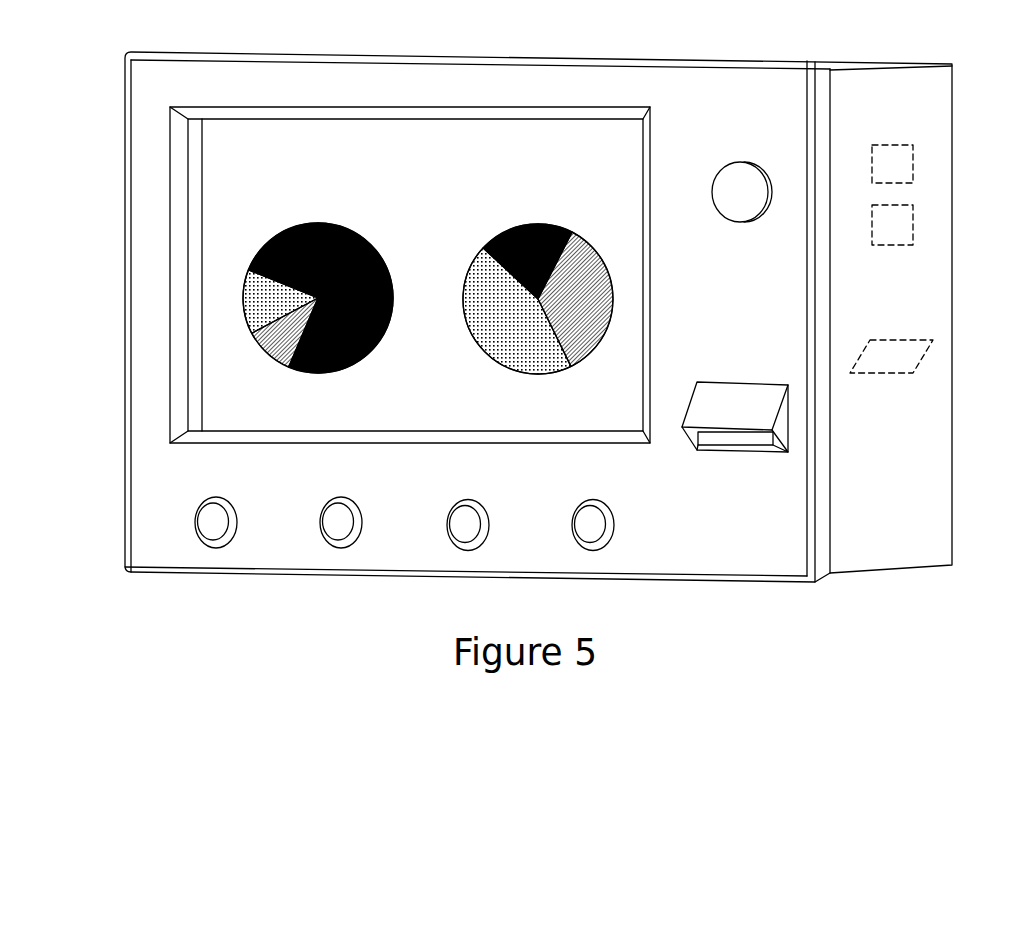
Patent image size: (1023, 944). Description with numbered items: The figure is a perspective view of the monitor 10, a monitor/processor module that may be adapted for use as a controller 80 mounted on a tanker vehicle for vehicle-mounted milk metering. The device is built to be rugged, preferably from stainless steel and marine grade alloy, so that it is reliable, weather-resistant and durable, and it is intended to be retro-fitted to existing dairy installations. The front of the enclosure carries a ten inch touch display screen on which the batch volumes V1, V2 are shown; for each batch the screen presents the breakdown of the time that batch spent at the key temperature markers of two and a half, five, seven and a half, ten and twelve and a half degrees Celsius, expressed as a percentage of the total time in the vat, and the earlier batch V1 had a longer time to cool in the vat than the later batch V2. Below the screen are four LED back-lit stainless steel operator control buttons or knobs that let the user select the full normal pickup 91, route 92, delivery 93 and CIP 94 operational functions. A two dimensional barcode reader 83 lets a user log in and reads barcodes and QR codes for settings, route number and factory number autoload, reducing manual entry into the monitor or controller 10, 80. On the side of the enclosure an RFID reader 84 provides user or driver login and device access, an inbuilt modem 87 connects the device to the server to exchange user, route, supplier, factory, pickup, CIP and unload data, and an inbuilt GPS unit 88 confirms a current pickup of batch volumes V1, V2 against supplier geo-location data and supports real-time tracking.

The monitor 10 is at (545, 352).
The controller 80 is at (912, 580).
The first batch volume V1 is at (275, 146).
The second batch volume V2 is at (508, 148).
The barcode reader 83 is at (737, 405).
The RFID reader 84 is at (916, 365).
The 3G/4G modem 87 is at (902, 223).
The GPS unit 88 is at (915, 165).
The full normal pickup button 91 is at (235, 502).
The route button 92 is at (358, 507).
The delivery button 93 is at (482, 505).
The CIP button 94 is at (612, 505).